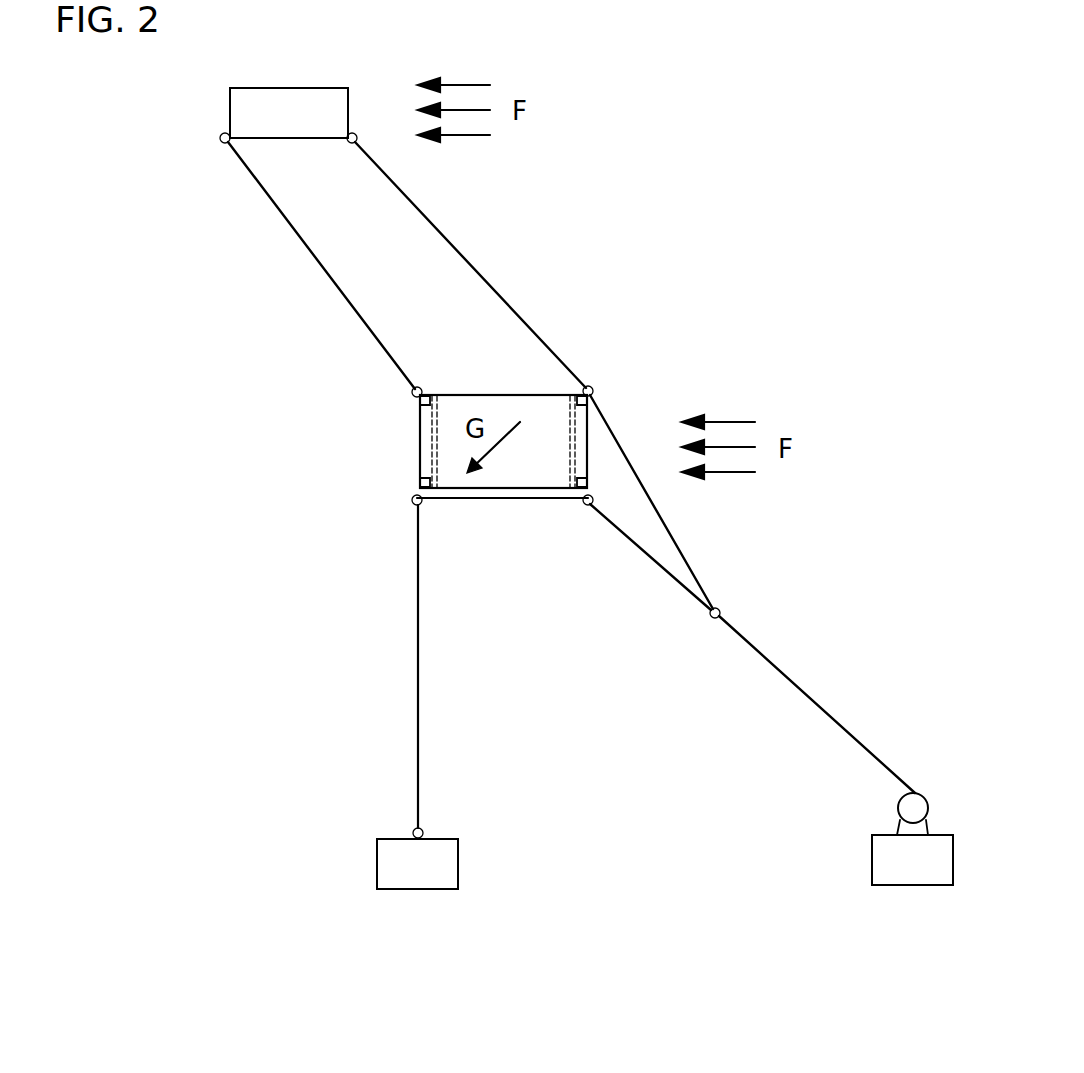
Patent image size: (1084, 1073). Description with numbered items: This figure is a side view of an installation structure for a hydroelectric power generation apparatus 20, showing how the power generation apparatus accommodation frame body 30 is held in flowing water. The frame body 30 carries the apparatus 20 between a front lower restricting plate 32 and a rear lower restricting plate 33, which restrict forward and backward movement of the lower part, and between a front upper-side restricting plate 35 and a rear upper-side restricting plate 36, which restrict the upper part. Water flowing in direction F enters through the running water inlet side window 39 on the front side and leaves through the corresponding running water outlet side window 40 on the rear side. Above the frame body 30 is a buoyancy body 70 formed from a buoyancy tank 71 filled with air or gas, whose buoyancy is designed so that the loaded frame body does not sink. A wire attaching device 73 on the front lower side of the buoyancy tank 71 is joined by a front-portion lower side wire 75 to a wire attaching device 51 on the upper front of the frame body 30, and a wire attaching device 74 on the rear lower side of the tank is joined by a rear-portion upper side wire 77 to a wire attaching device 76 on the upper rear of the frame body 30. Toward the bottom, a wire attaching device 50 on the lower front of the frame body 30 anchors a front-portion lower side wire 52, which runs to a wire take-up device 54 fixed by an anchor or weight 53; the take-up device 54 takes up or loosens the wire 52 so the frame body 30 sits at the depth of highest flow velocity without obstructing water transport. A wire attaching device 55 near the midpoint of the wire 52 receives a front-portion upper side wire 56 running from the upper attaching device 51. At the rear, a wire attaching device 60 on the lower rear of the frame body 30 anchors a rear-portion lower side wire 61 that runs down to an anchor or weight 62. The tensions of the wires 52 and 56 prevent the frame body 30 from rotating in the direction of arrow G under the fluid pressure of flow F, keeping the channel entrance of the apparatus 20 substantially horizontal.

The hydroelectric power generation apparatus 20 is at (492, 418).
The power generation apparatus accommodation frame body 30 is at (466, 508).
The lower restricting plate 32 is at (594, 490).
The lower restricting plate 33 is at (425, 482).
The upper-side restricting plate 35 is at (580, 390).
The upper-side restricting plate 36 is at (425, 401).
The running water inlet side window 39 is at (575, 426).
The running water outlet side window 40 is at (430, 445).
The wire attaching device 50 is at (584, 505).
The wire attaching device 51 is at (594, 389).
The front-portion lower side wire 52 is at (804, 693).
The anchor or weight 53 is at (890, 866).
The wire take-up device 54 is at (908, 808).
The wire attaching device 55 is at (722, 612).
The front-portion upper side wire 56 is at (665, 517).
The wire attaching device 60 is at (411, 500).
The rear-portion lower side wire 61 is at (416, 686).
The anchor or weight 62 is at (390, 868).
The buoyancy body 70 is at (312, 75).
The buoyancy tank 71 is at (274, 100).
The wire attaching device 73 is at (358, 141).
The wire attaching device 74 is at (225, 144).
The front-portion lower side wire 75 is at (470, 262).
The wire attaching device 76 is at (411, 391).
The rear-portion upper side wire 77 is at (336, 290).